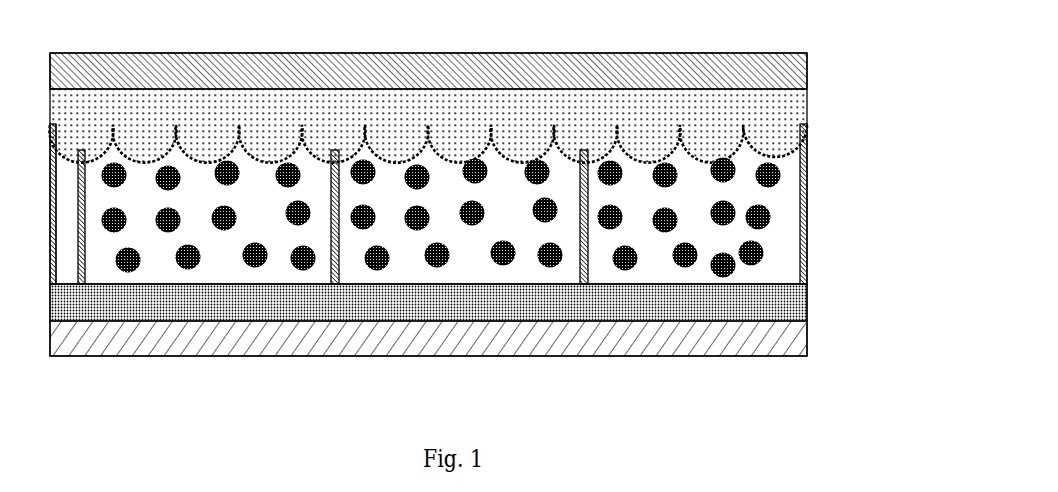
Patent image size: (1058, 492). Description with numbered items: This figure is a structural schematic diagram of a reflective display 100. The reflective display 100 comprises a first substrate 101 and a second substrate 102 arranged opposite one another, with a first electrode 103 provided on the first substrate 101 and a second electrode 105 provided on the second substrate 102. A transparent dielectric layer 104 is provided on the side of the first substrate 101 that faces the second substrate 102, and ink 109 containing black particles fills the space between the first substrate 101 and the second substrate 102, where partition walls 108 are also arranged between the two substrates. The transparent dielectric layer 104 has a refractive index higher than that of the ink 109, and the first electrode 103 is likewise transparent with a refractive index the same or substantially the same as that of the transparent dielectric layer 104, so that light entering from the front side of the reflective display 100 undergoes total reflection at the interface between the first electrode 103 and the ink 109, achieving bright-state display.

The reflective display 100 is at (444, 368).
The first substrate 101 is at (805, 53).
The second substrate 102 is at (770, 337).
The first electrode 103 is at (803, 135).
The transparent dielectric layer 104 is at (775, 113).
The second electrode 105 is at (772, 295).
The partition walls 108 is at (588, 236).
The ink 109 is at (776, 185).